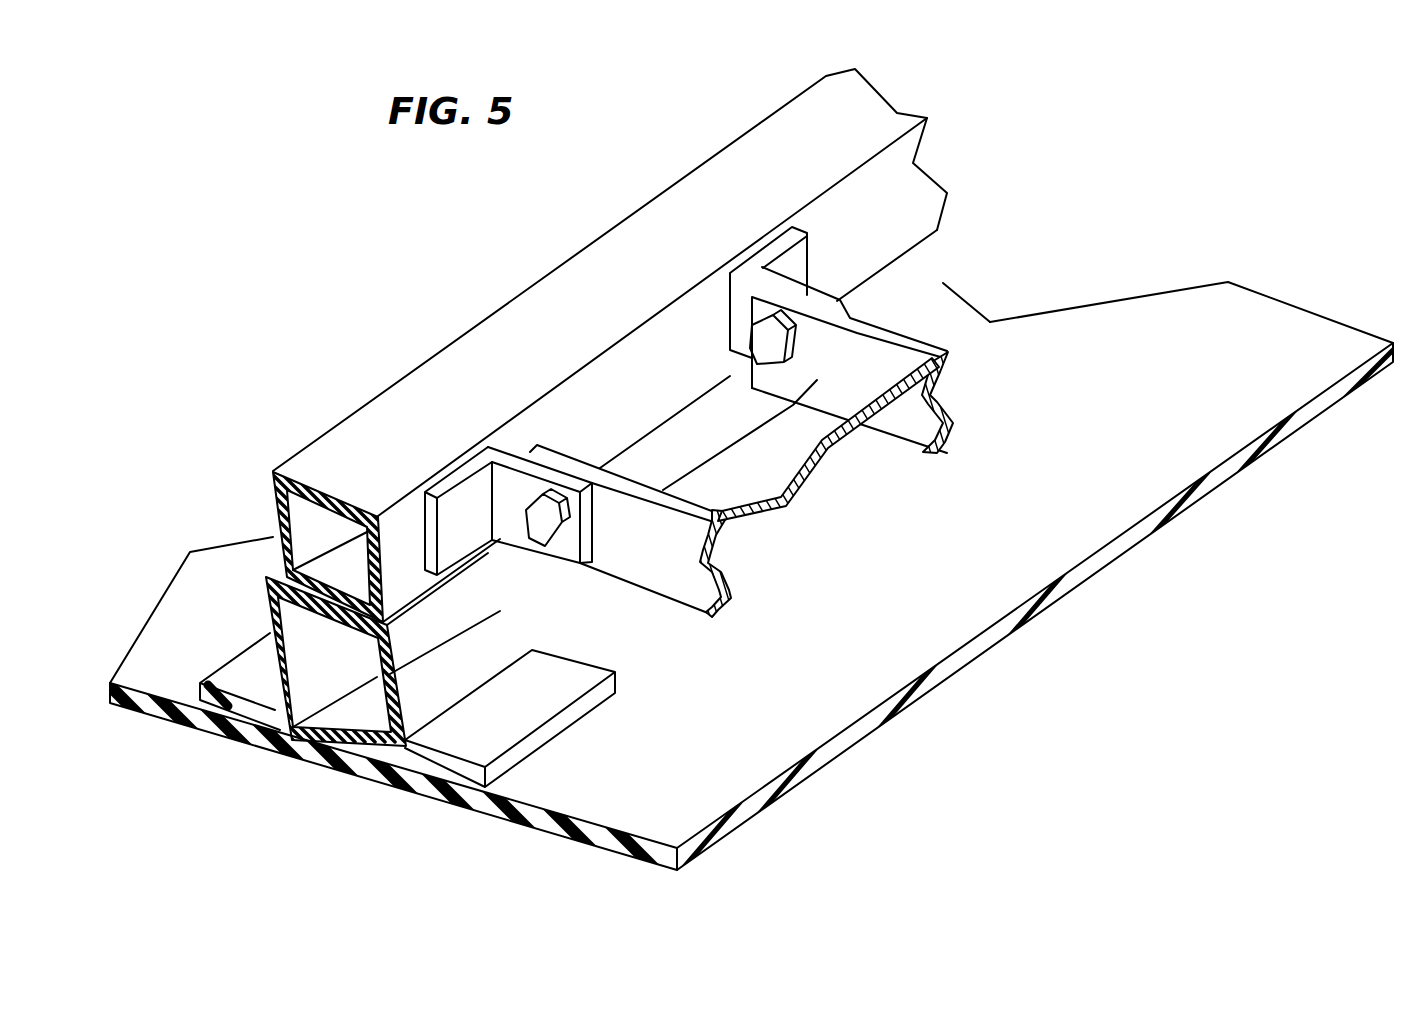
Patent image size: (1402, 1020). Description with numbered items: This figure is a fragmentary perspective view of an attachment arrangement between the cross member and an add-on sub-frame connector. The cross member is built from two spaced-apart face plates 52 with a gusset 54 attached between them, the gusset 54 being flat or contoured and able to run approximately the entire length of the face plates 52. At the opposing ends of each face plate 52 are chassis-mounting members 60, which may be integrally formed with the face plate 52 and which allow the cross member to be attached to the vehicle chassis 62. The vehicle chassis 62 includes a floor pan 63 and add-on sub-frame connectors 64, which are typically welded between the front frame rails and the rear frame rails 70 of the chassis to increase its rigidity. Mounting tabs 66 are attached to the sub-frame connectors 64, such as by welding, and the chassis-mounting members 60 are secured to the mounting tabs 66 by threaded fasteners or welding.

The face plate 52 is at (657, 577).
The gusset 54 is at (808, 446).
The chassis-mounting member 60 is at (605, 535).
The vehicle chassis 62 is at (1199, 324).
The floor pan 63 is at (1189, 399).
The add-on sub-frame connector 64 is at (817, 127).
The mounting tab 66 is at (467, 507).
The rear frame rail 70 is at (392, 705).